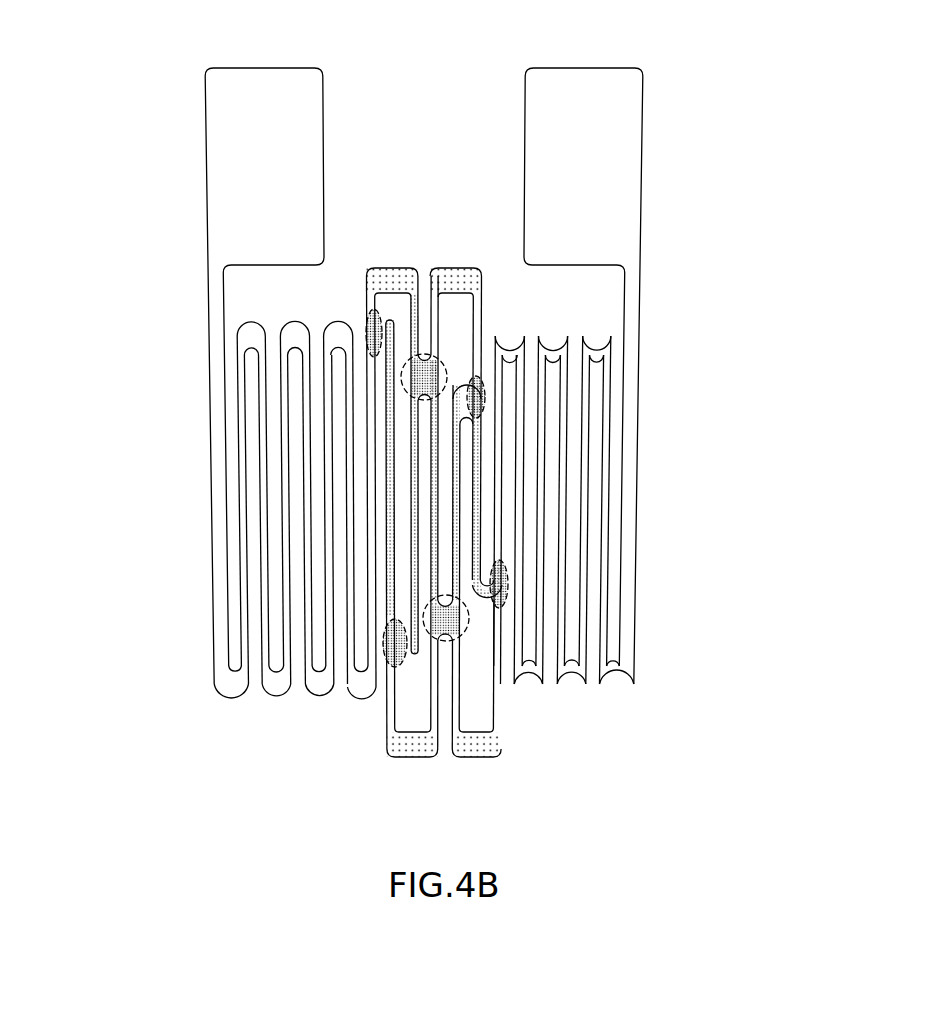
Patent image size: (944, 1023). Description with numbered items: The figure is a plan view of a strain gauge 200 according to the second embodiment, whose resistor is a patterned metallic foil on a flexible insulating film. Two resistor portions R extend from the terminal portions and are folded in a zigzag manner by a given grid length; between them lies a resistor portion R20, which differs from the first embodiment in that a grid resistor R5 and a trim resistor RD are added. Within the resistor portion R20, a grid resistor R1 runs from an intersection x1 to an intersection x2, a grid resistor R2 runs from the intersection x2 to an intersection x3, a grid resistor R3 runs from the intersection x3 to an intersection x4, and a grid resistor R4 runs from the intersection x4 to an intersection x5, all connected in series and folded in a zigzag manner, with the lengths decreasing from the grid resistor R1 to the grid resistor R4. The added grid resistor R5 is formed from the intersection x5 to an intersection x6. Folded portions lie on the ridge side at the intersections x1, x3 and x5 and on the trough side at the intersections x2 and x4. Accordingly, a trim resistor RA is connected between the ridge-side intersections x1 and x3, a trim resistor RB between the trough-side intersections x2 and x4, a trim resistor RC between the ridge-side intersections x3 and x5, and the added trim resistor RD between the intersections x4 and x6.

The strain gauge 200 is at (157, 122).
The resistor portion R is at (370, 706).
The resistor portion R20 is at (480, 190).
The trim resistor RA is at (390, 285).
The trim resistor RB is at (418, 748).
The trim resistor RC is at (452, 285).
The trim resistor RD is at (474, 748).
The grid resistor R1 is at (388, 473).
The grid resistor R2 is at (410, 500).
The grid resistor R3 is at (430, 535).
The grid resistor R4 is at (453, 555).
The grid resistor R5 is at (481, 475).
The intersection x1 is at (370, 317).
The intersection x2 is at (382, 640).
The intersection x3 is at (437, 362).
The intersection x4 is at (470, 618).
The intersection x5 is at (486, 383).
The intersection x6 is at (507, 576).